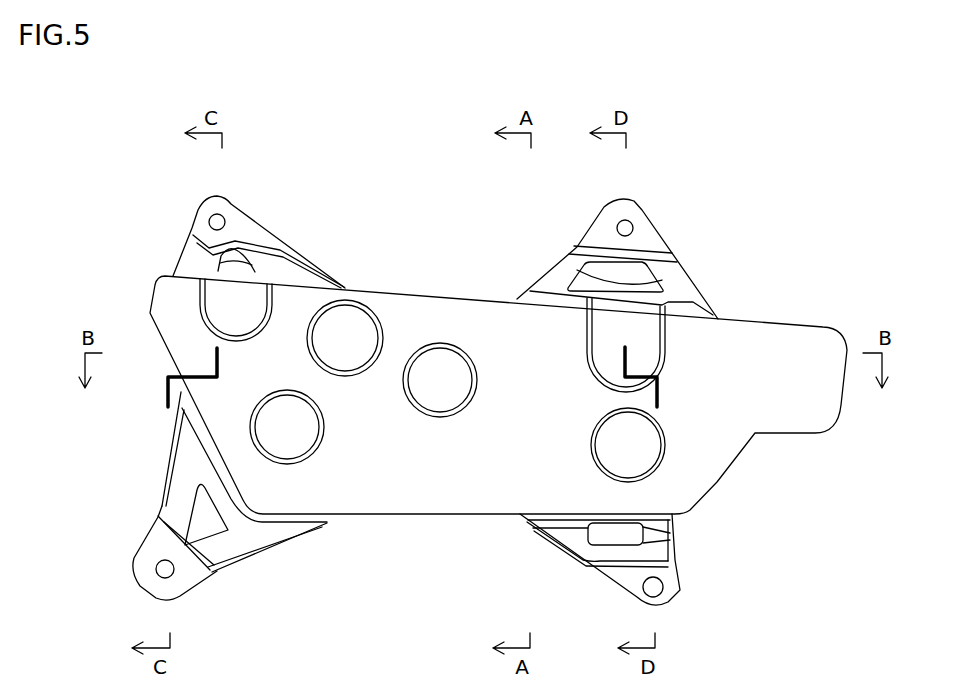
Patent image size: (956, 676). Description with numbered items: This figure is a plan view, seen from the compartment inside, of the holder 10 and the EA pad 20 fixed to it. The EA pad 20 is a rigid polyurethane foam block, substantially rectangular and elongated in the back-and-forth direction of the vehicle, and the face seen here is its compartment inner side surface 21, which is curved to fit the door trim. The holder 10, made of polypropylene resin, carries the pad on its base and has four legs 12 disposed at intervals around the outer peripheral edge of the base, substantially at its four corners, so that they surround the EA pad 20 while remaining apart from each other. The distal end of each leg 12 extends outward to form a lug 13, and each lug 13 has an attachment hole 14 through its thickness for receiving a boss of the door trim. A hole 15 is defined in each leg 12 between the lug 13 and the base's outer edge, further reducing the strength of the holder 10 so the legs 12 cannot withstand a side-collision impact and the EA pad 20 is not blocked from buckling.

The holder 10 is at (450, 151).
The leg 12 is at (186, 252).
The lug 13 is at (221, 197).
The attachment hole 14 is at (223, 220).
The hole 15 is at (236, 255).
The EA pad 20 is at (409, 500).
The compartment inner side surface 21 is at (450, 490).